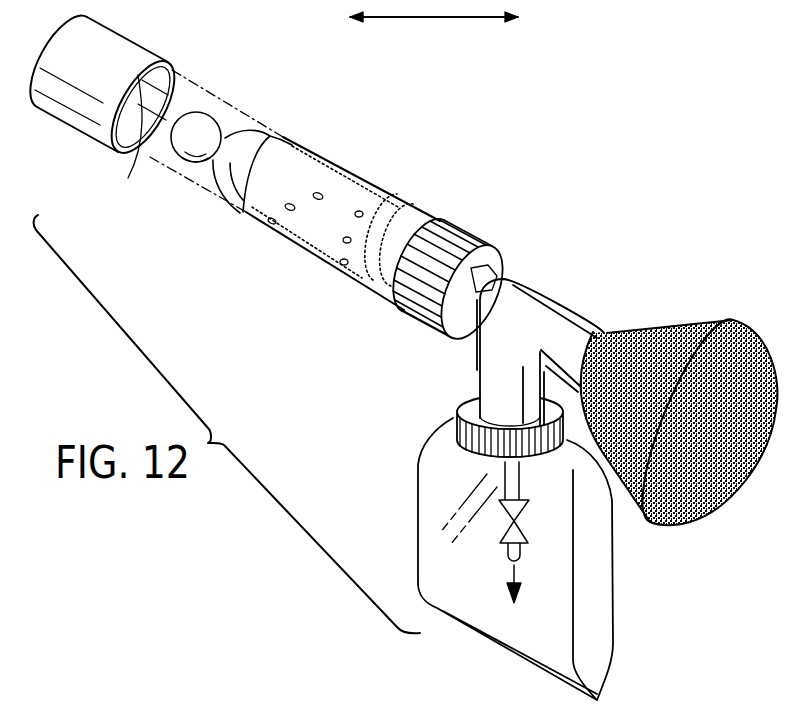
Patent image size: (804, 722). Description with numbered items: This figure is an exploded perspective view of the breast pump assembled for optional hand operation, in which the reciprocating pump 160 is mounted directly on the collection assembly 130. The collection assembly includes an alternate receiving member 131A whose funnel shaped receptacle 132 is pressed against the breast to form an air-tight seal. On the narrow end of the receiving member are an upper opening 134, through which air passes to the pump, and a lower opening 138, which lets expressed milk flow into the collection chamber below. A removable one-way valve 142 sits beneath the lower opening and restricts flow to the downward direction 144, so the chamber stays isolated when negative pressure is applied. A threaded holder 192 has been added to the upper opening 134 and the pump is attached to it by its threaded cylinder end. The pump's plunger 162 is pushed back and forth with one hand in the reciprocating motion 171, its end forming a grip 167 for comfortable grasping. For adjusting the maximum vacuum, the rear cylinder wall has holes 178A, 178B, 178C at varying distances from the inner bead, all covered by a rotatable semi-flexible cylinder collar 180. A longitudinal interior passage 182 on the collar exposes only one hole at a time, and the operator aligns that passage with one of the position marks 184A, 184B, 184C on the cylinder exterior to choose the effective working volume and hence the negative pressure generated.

The collection assembly 130 is at (717, 300).
The alternate receiving member 131A is at (543, 308).
The funnel shaped receptacle 132 is at (690, 327).
The upper opening 134 is at (490, 270).
The lower opening 138 is at (485, 360).
The one-way valve 142 is at (523, 533).
The downward direction 144 is at (519, 575).
The reciprocating pump 160 is at (366, 203).
The plunger 162 is at (292, 150).
The grip 167 is at (208, 122).
The reciprocating motion 171 is at (458, 18).
The hole 178A is at (318, 192).
The hole 178B is at (286, 207).
The hole 178C is at (270, 223).
The cylinder collar 180 is at (116, 54).
The interior passage 182 is at (114, 133).
The position mark 184A is at (362, 213).
The position mark 184B is at (346, 243).
The position mark 184C is at (342, 265).
The threaded holder 192 is at (457, 232).